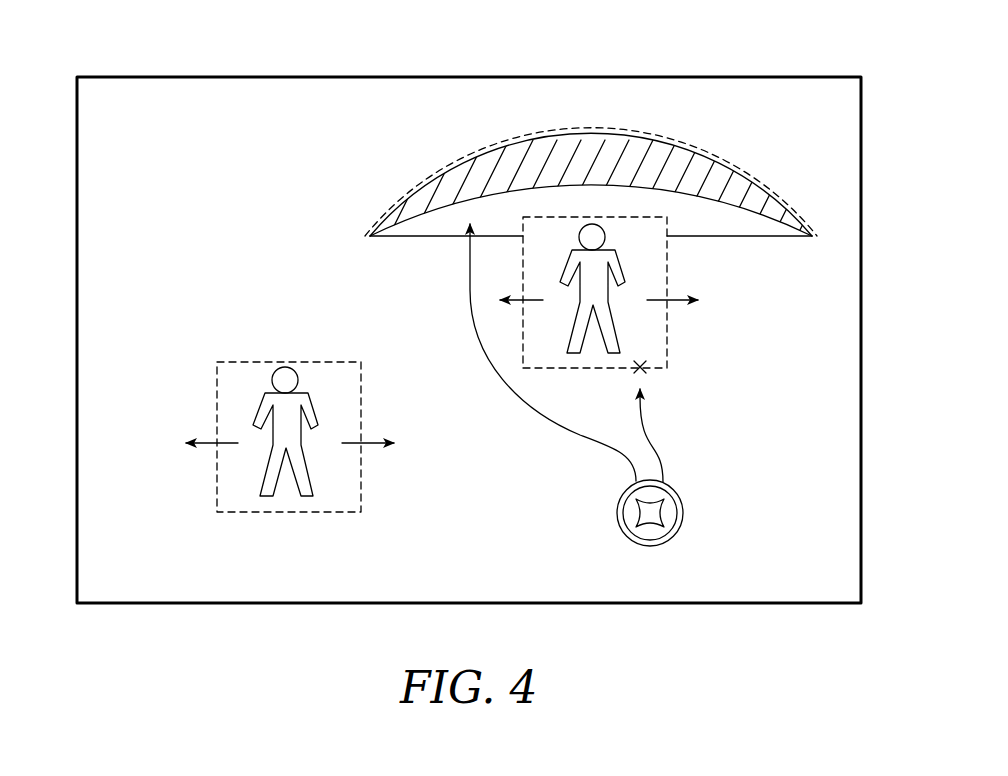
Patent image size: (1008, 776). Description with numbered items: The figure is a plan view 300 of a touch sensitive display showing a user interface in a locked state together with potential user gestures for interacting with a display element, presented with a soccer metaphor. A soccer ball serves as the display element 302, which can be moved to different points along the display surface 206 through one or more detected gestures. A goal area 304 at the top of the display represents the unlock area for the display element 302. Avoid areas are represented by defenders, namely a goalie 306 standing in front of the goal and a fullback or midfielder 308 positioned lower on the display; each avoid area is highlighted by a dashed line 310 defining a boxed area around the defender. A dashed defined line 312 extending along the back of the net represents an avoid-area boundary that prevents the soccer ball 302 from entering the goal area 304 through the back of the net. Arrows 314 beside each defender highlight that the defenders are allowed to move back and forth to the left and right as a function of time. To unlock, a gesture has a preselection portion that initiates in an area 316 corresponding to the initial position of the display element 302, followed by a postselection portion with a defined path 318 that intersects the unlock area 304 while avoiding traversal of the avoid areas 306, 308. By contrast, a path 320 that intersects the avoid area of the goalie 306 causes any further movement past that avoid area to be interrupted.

The plan view 300 is at (795, 48).
The display surface 206 is at (90, 166).
The display element 302 is at (650, 522).
The goal area 304 is at (432, 228).
The goalie 306 is at (590, 234).
The fullback or midfielder 308 is at (268, 496).
The dashed line 310 is at (667, 341).
The defined line 312 is at (600, 129).
The arrows 314 is at (675, 294).
The area 316 is at (684, 513).
The defined path 318 is at (540, 420).
The path 320 is at (641, 420).